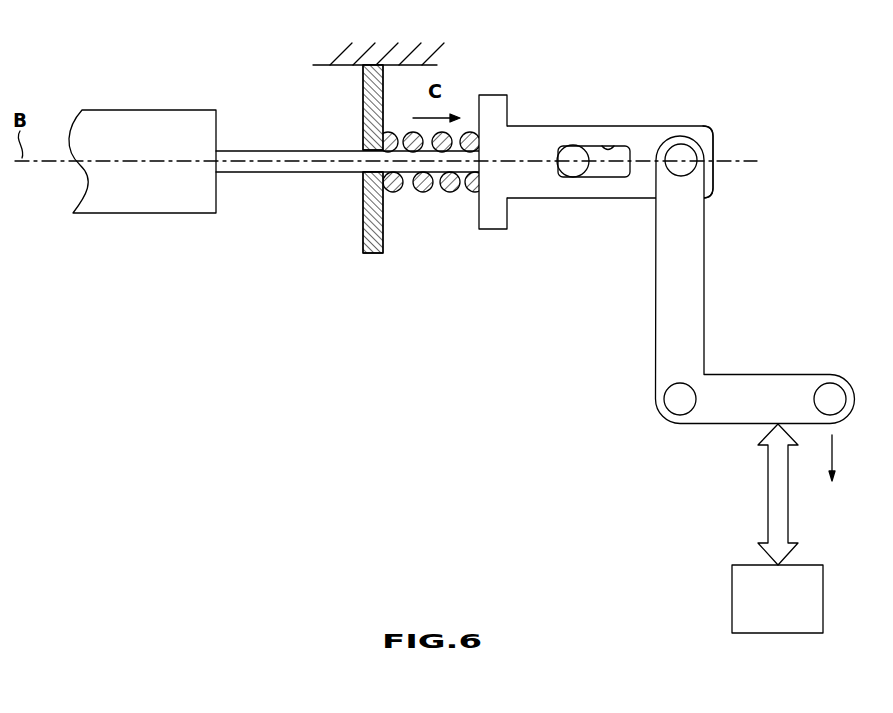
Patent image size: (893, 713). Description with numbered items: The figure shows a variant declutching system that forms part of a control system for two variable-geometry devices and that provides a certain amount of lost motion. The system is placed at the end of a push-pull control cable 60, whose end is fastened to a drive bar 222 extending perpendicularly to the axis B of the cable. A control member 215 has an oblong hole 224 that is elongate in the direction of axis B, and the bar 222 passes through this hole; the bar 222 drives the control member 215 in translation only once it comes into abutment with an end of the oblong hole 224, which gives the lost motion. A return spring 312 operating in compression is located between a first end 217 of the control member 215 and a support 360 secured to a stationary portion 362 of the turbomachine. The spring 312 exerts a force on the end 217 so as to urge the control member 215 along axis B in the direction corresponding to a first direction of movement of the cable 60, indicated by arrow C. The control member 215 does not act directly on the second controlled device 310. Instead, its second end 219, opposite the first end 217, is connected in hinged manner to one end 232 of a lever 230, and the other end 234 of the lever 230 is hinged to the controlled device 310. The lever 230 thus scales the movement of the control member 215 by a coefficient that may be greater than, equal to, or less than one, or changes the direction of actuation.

The push-pull control cable 60 is at (132, 130).
The stationary portion of the turbomachine 362 is at (330, 54).
The support 360 is at (363, 107).
The return spring 312 is at (423, 193).
The first end of the control member 217 is at (479, 208).
The control member 215 is at (542, 190).
The drive bar 222 is at (574, 150).
The oblong hole 224 is at (617, 146).
The second end of the control member 219 is at (712, 143).
The end of the lever 232 is at (699, 168).
The lever 230 is at (666, 261).
The other end of the lever 234 is at (848, 376).
The second controlled device 310 is at (793, 602).